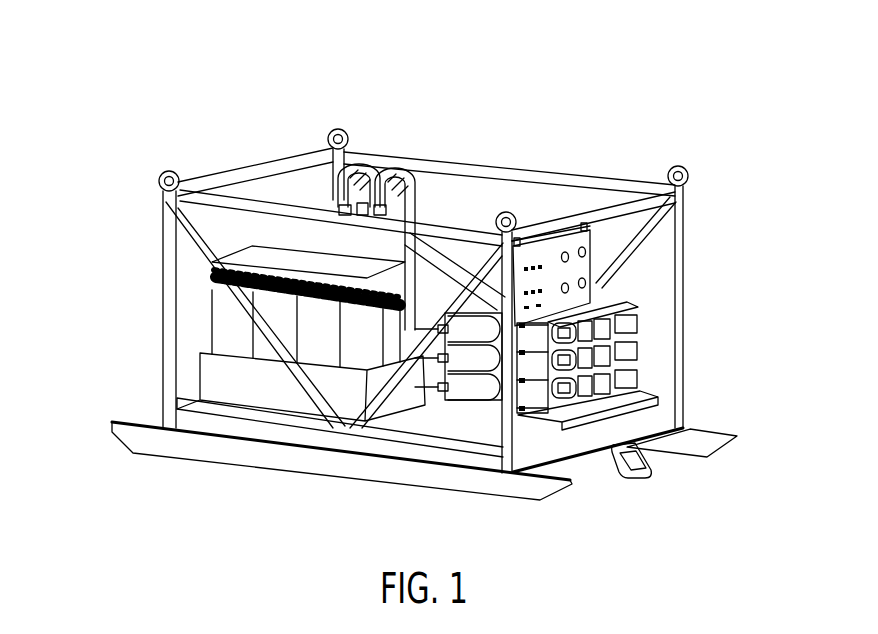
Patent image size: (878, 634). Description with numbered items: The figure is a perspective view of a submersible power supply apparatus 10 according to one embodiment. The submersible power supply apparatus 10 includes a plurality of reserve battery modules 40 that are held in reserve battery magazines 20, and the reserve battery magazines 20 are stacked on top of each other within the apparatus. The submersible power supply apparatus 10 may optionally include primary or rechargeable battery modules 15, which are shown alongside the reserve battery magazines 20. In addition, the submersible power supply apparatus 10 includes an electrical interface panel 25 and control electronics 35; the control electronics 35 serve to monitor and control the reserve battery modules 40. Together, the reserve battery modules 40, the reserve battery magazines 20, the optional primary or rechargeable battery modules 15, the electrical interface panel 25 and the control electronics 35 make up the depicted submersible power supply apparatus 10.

The submersible power supply apparatus 10 is at (612, 86).
The primary or rechargeable battery modules 15 is at (213, 317).
The reserve battery magazines 20 is at (640, 302).
The electrical interface panel 25 is at (588, 264).
The control electronics 35 is at (340, 240).
The reserve battery modules 40 is at (637, 350).